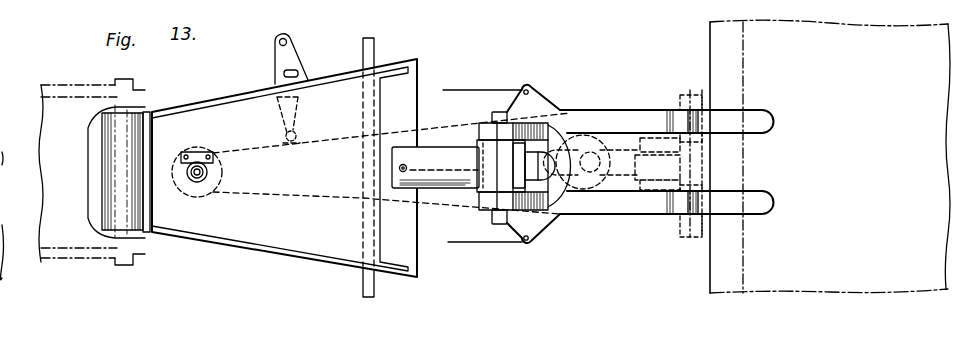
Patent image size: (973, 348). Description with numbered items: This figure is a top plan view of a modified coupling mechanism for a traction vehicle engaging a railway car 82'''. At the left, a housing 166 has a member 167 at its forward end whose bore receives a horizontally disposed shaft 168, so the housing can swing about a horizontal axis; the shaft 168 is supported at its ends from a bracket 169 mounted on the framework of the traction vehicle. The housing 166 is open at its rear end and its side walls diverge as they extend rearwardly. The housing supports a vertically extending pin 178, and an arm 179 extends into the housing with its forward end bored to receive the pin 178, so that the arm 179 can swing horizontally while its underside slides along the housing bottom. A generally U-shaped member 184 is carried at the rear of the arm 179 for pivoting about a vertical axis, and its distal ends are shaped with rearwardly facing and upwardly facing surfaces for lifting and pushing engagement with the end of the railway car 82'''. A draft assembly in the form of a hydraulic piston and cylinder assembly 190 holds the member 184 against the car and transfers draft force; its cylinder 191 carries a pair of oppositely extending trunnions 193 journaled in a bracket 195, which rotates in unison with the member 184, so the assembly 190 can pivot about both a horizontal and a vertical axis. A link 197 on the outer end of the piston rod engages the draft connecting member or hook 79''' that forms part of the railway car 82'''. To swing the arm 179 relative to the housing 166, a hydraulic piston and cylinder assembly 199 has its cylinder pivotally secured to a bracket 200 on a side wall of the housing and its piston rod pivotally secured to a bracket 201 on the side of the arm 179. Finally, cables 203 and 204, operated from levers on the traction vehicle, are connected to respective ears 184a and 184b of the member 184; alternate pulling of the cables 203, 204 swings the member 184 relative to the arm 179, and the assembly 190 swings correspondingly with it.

The housing 166 is at (222, 97).
The member 167 is at (150, 232).
The shaft 168 is at (127, 263).
The bracket 169 is at (86, 258).
The pin 178 is at (204, 183).
The arm 179 is at (333, 197).
The hydraulic piston and cylinder assembly 190 is at (468, 135).
The cylinder 191 is at (408, 180).
The trunnions 193 is at (495, 114).
The bracket 195 is at (474, 210).
The link 197 is at (605, 186).
The hydraulic piston and cylinder assembly 199 is at (298, 70).
The bracket 200 is at (273, 60).
The bracket 201 is at (300, 138).
The cable 203 is at (477, 90).
The cable 204 is at (476, 245).
The U-shaped member 184 is at (642, 112).
The ear 184a is at (547, 97).
The ear 184b is at (542, 228).
The railway car 82''' is at (806, 156).
The draft connecting member or hook 79''' is at (714, 163).